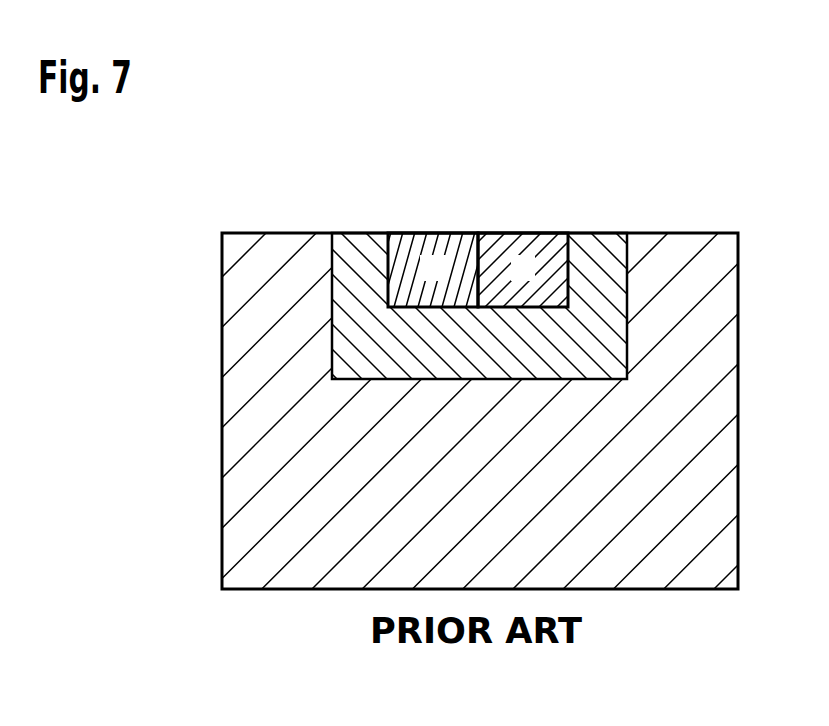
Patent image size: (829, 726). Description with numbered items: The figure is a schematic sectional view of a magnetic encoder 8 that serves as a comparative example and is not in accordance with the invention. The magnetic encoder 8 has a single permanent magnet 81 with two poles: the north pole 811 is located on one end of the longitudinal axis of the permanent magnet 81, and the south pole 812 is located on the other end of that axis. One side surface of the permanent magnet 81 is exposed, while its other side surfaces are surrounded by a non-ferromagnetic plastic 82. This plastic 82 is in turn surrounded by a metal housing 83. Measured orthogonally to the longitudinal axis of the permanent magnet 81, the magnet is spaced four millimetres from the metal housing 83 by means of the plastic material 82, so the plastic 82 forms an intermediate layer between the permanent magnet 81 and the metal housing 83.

The magnetic encoder 8 is at (160, 178).
The permanent magnet 81 is at (478, 200).
The north pole 811 is at (405, 246).
The south pole 812 is at (551, 247).
The non-ferromagnetic plastic 82 is at (610, 247).
The metal housing 83 is at (687, 248).